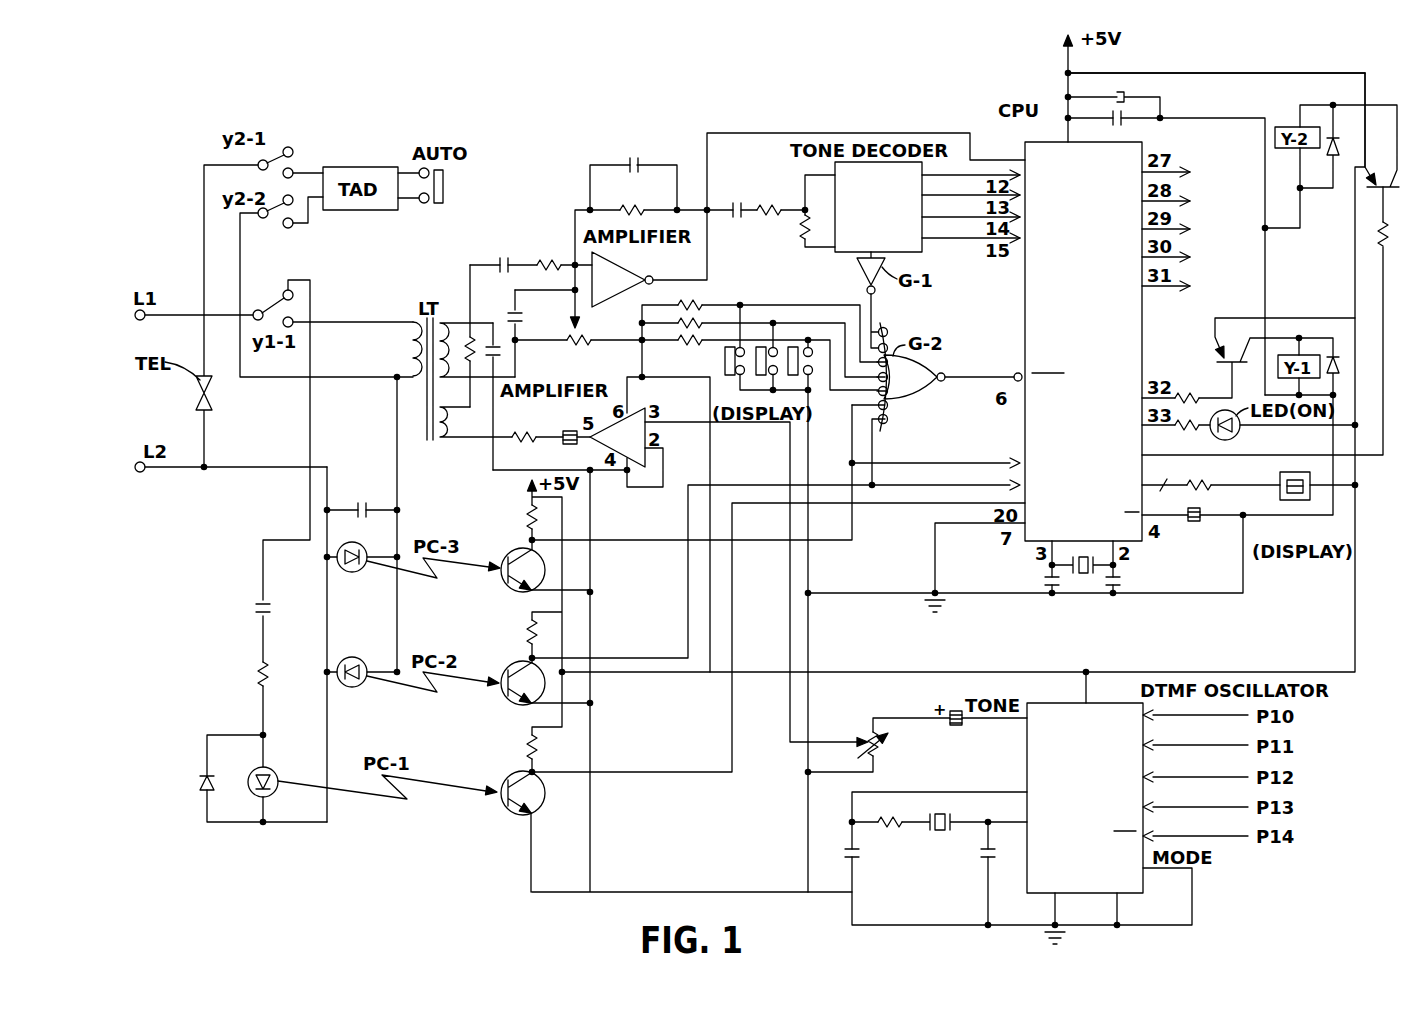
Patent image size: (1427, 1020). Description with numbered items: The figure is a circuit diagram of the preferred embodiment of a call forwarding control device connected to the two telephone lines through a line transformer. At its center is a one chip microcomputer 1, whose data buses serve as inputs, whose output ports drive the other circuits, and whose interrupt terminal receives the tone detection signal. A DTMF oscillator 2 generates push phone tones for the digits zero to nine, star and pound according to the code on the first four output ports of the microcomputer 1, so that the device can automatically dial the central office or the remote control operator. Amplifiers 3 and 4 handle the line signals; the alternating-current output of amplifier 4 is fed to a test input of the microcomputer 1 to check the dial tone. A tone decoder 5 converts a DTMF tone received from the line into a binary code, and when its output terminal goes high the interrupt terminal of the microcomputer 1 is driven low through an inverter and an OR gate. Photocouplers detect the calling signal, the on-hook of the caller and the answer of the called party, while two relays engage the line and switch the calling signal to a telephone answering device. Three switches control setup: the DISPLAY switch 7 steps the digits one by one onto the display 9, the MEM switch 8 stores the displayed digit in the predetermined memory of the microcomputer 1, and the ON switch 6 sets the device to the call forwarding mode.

The one chip microcomputer 1 is at (1022, 143).
The DTMF oscillator 2 is at (1095, 703).
The amplifier 3 is at (606, 428).
The amplifier 4 is at (616, 264).
The tone decoder 5 is at (835, 180).
The switch 6 is at (723, 348).
The switch 7 is at (742, 388).
The switch 8 is at (790, 346).
The display 9 is at (1280, 496).